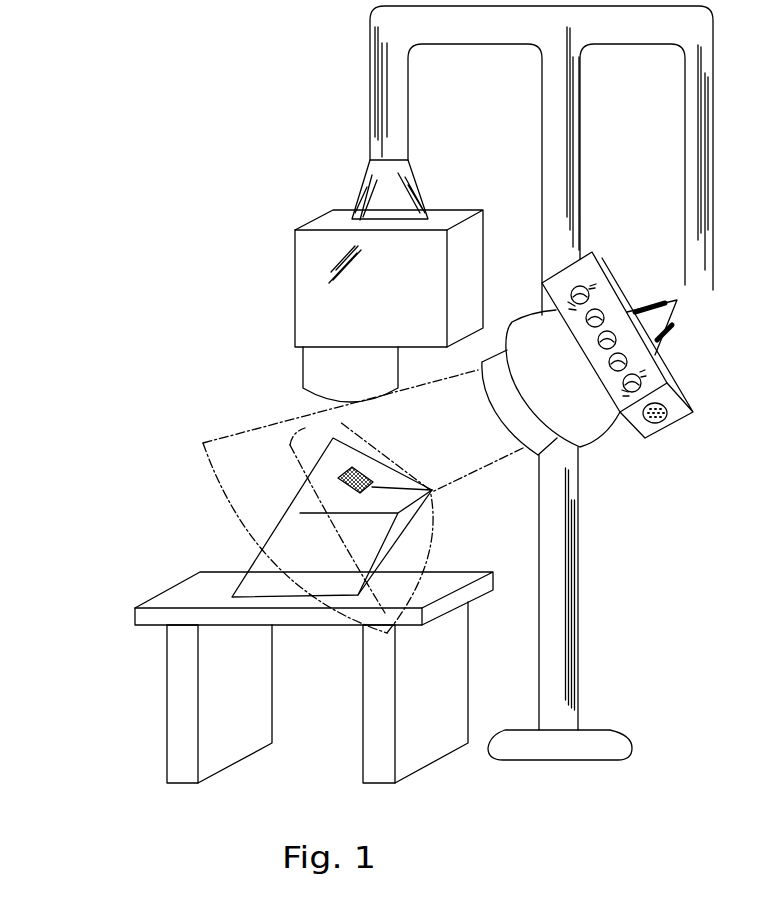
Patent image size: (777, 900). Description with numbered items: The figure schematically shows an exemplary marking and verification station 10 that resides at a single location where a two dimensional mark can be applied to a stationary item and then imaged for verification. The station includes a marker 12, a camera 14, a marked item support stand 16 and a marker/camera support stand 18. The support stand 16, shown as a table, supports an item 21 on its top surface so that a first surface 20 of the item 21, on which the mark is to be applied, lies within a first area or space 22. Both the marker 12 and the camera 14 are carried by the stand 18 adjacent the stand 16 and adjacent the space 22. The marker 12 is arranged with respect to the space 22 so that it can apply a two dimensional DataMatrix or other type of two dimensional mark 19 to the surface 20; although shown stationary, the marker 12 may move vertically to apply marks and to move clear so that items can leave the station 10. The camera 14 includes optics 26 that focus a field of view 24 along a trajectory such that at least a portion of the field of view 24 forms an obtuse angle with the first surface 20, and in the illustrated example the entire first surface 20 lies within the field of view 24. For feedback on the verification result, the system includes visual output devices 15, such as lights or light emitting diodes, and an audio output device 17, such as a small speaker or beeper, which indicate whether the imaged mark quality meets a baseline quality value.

The marking and verification station 10 is at (136, 347).
The marker 12 is at (313, 258).
The camera 14 is at (560, 357).
The visual output devices 15 is at (597, 292).
The marked item support stand 16 is at (210, 598).
The audio output device 17 is at (661, 420).
The marker/camera support stand 18 is at (560, 590).
The two dimensional mark 19 is at (432, 490).
The first surface 20 is at (373, 488).
The item 21 is at (272, 585).
The first area or space 22 is at (300, 438).
The field of view 24 is at (513, 463).
The optics 26 is at (520, 413).